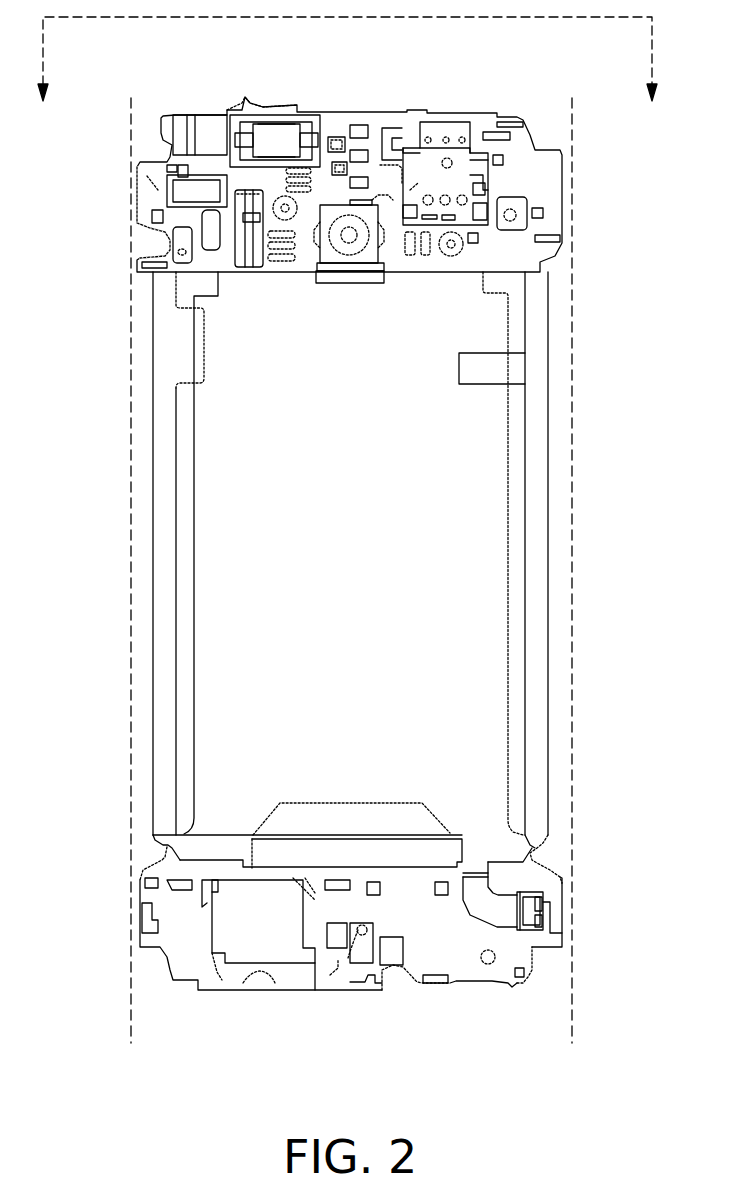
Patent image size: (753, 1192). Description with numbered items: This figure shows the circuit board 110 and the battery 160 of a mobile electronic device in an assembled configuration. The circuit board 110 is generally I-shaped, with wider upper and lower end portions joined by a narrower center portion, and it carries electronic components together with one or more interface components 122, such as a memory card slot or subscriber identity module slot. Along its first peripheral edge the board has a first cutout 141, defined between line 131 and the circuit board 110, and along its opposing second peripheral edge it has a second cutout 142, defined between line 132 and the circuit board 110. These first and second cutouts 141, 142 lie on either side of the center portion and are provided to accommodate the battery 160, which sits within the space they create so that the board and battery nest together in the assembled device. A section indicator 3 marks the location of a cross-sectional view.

The section line 3- 3 is at (653, 31).
The circuit board 110 is at (349, 160).
The interface component 122 is at (422, 101).
The battery 160 is at (322, 577).
The first cutout 141 is at (151, 709).
The second cutout 142 is at (551, 709).
The line 131 is at (130, 984).
The line 132 is at (573, 984).